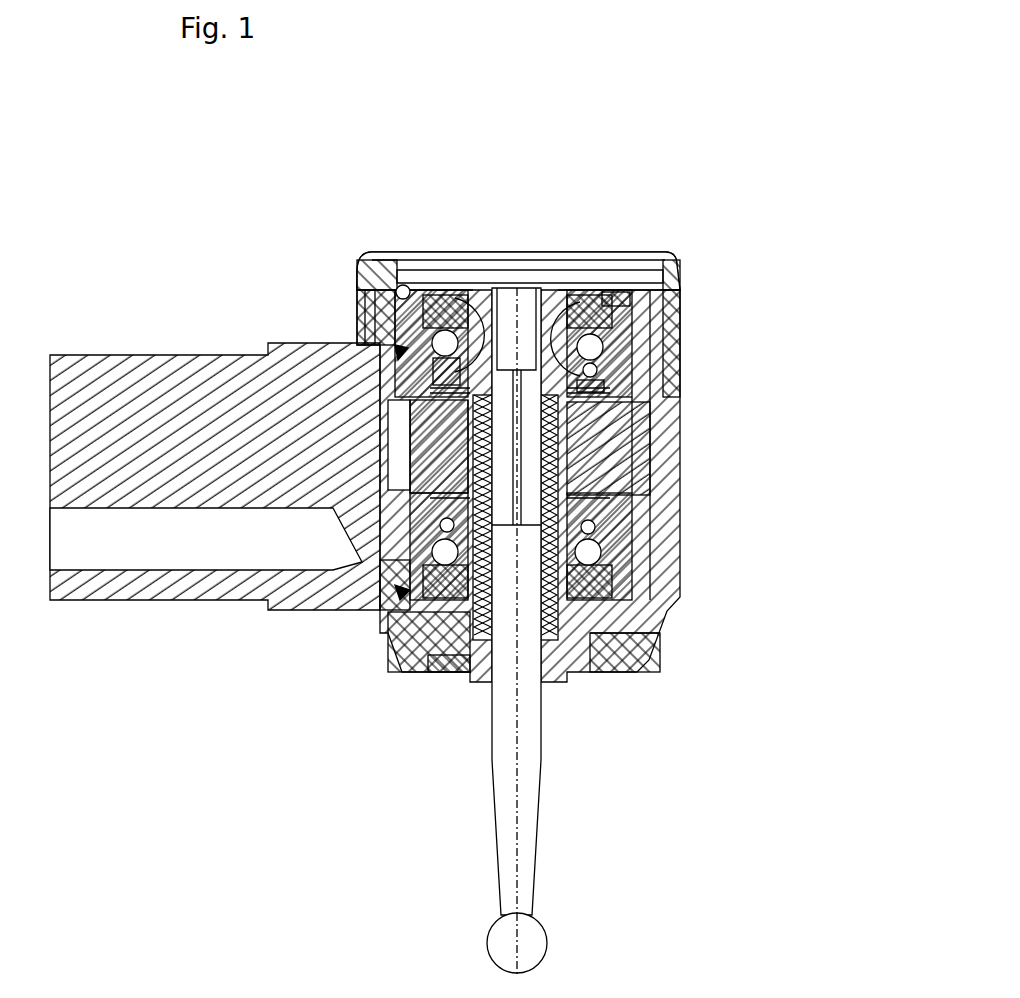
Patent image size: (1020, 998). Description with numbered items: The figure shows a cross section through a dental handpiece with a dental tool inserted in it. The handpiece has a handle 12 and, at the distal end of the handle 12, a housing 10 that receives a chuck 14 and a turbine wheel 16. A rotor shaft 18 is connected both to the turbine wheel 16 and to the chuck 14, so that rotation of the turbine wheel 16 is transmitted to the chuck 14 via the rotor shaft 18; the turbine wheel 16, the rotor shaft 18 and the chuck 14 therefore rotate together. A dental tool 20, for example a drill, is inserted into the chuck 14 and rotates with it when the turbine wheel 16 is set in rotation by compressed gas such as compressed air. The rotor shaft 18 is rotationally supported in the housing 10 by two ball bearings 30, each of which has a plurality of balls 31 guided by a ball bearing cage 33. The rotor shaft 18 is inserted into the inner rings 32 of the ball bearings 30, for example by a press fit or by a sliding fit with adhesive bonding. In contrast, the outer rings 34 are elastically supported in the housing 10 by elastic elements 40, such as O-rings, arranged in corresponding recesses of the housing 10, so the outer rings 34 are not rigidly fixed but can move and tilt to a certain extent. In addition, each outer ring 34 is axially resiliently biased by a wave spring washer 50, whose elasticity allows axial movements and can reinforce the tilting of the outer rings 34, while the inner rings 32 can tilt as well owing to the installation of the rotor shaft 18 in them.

The housing 10 is at (681, 429).
The handle 12 is at (127, 370).
The chuck 14 is at (553, 672).
The turbine wheel 16 is at (632, 462).
The rotor shaft 18 is at (579, 285).
The dental tool 20 is at (528, 948).
The ball bearing 30 is at (403, 352).
The ball 31 is at (583, 551).
The inner ring 32 is at (447, 328).
The ball bearing cage 33 is at (503, 292).
The outer ring 34 is at (372, 256).
The elastic element 40 is at (680, 292).
The wave spring washer 50 is at (607, 300).